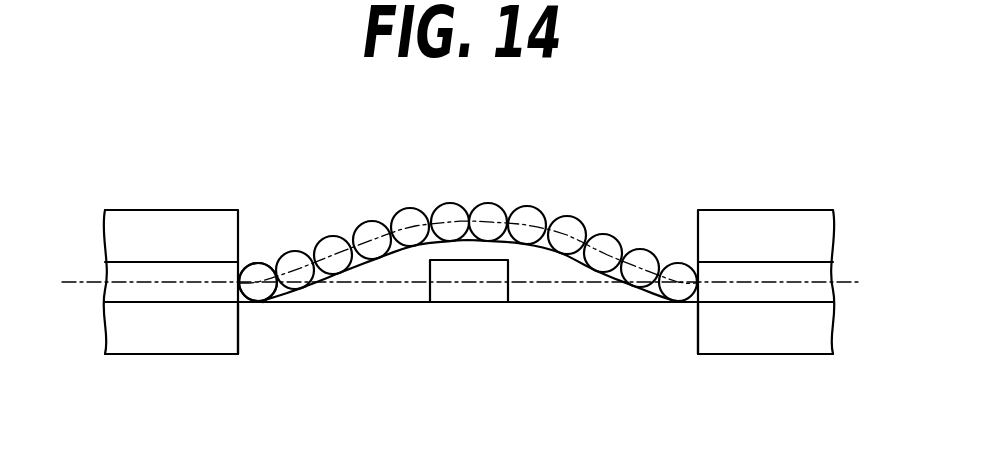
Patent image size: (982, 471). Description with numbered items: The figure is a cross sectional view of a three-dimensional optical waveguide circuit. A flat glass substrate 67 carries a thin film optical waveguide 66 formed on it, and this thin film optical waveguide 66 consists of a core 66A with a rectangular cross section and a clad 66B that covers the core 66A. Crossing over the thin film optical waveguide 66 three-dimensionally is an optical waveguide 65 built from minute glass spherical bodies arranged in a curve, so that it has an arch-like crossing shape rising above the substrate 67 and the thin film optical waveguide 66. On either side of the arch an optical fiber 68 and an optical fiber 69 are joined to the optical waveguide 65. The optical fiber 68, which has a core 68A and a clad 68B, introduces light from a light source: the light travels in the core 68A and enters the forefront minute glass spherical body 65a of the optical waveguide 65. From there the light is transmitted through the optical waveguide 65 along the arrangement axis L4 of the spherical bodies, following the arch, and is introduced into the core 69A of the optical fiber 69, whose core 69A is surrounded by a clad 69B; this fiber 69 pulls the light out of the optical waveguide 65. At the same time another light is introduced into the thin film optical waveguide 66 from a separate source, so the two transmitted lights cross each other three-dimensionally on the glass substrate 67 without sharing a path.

The optical fiber 68 is at (165, 210).
The core 68A is at (153, 293).
The clad 68B is at (198, 335).
The optical fiber 69 is at (778, 210).
The core 69A is at (747, 290).
The clad 69B is at (798, 340).
The thin film optical waveguide 66 is at (565, 290).
The core 66A is at (467, 292).
The clad 66B is at (378, 290).
The glass substrate 67 is at (313, 302).
The optical waveguide 65 is at (510, 211).
The forefront minute glass spherical body 65a is at (260, 263).
The arrangement axis L4 is at (567, 236).